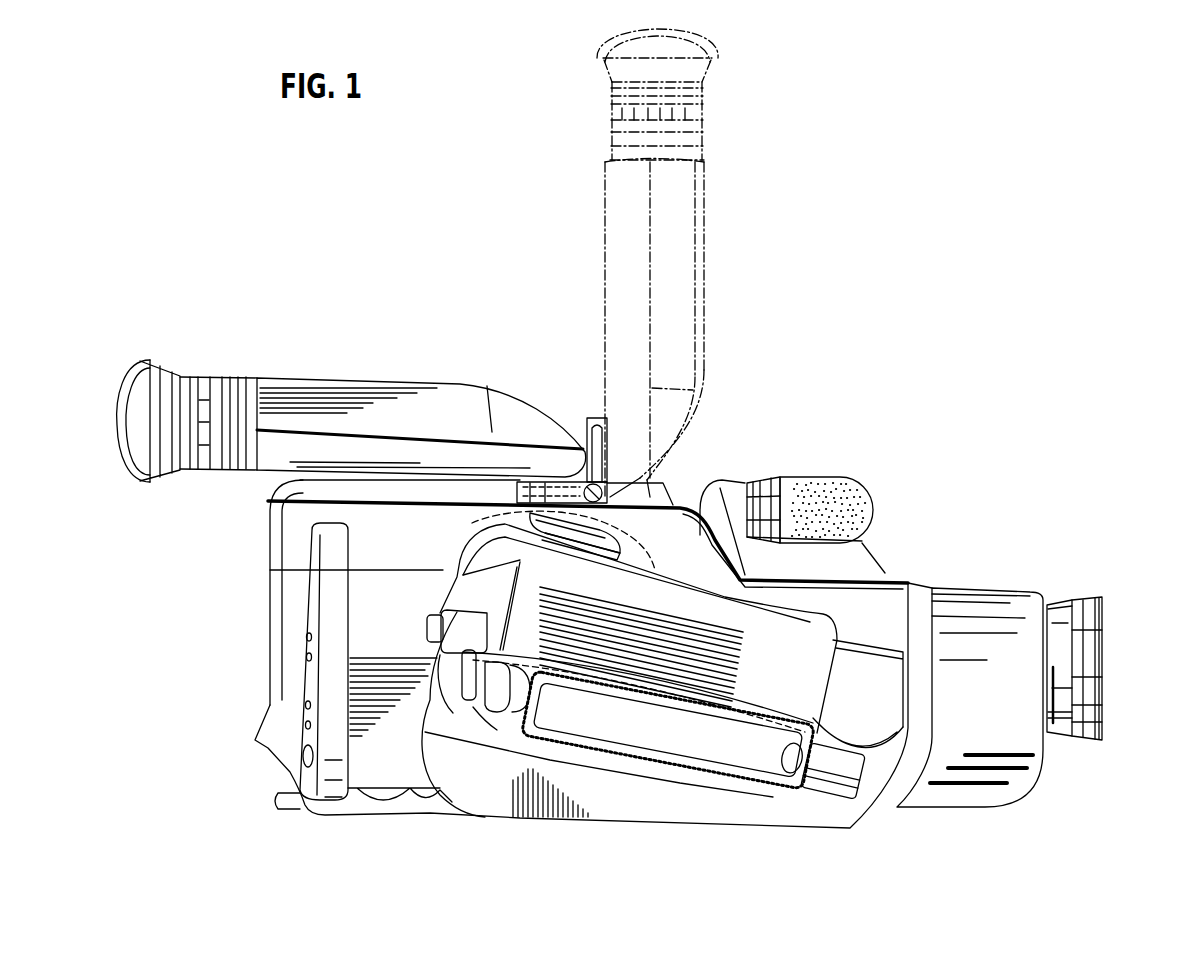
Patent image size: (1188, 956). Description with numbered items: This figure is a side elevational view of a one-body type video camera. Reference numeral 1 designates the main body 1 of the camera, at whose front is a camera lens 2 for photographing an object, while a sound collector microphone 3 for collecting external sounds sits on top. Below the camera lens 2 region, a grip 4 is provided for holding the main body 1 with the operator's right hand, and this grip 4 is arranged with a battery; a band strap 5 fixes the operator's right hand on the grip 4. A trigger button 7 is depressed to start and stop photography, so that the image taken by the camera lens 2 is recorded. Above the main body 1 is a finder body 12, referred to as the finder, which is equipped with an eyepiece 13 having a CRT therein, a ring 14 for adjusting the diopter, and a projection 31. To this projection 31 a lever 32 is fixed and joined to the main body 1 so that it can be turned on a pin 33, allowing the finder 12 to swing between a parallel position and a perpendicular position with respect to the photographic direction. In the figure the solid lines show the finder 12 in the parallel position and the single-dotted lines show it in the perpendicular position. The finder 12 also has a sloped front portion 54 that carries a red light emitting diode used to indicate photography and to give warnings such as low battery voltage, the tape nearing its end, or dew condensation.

The main body 1 is at (977, 580).
The camera lens 2 is at (1100, 622).
The sound collector microphone 3 is at (852, 476).
The grip 4 is at (716, 483).
The band strap 5 is at (707, 737).
The trigger button 7 is at (430, 660).
The finder body 12 is at (386, 376).
The eyepiece 13 is at (134, 404).
The ring 14 is at (210, 390).
The projection 31 is at (586, 393).
The lever 32 is at (616, 560).
The pin 33 is at (610, 535).
The sloped front portion 54 is at (527, 400).